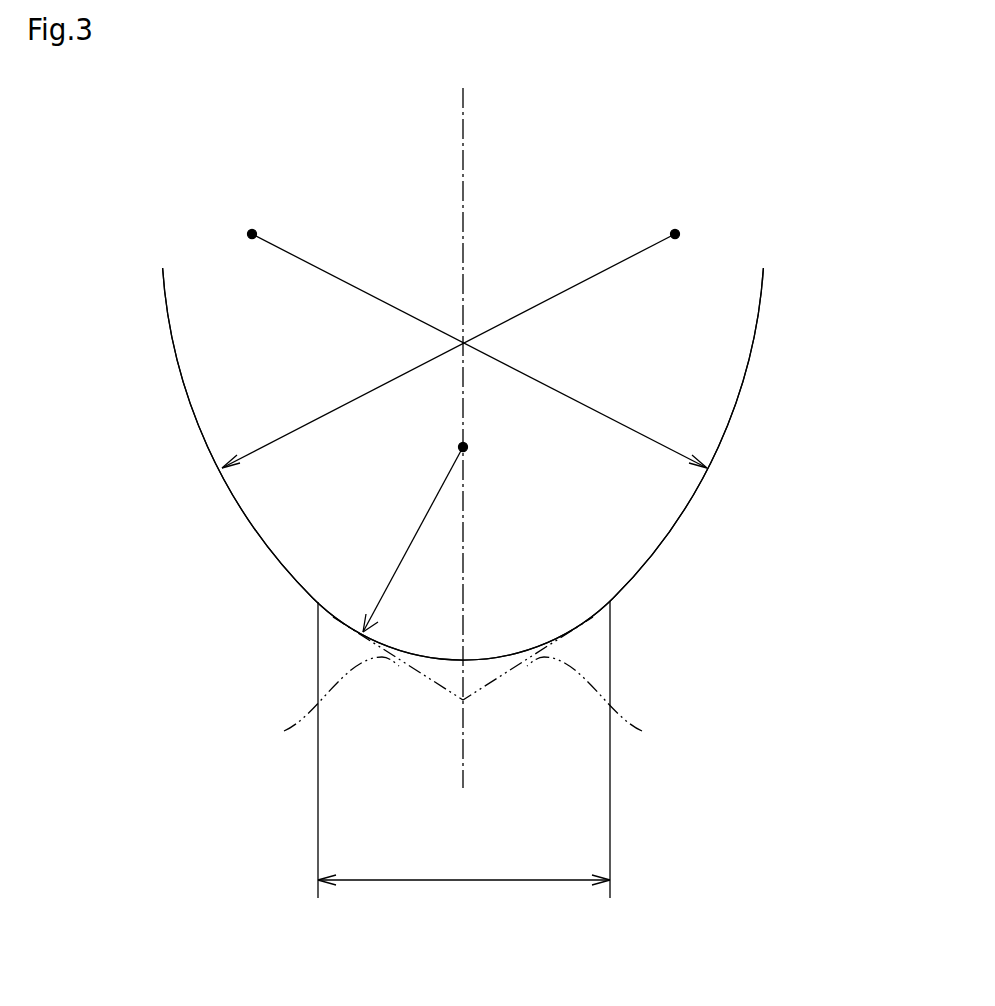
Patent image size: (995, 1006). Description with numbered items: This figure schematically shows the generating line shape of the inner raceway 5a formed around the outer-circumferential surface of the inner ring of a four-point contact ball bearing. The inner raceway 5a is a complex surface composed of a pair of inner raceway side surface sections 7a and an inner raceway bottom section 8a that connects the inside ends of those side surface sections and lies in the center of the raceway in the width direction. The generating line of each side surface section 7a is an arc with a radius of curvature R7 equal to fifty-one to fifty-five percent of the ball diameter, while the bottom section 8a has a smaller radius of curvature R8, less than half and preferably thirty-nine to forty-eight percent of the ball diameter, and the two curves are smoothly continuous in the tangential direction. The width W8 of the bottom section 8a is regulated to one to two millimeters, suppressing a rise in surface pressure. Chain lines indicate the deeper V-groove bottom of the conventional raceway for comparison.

The inner raceway 5a is at (653, 550).
The inner raceway side surface sections 7a is at (188, 400).
The inner raceway bottom section 8a is at (437, 660).
The radius of curvature of the inner raceway side surface sections R7 is at (333, 410).
The radius of curvature of the inner raceway bottom section R8 is at (410, 545).
The width of the inner raceway bottom section W8 is at (465, 882).